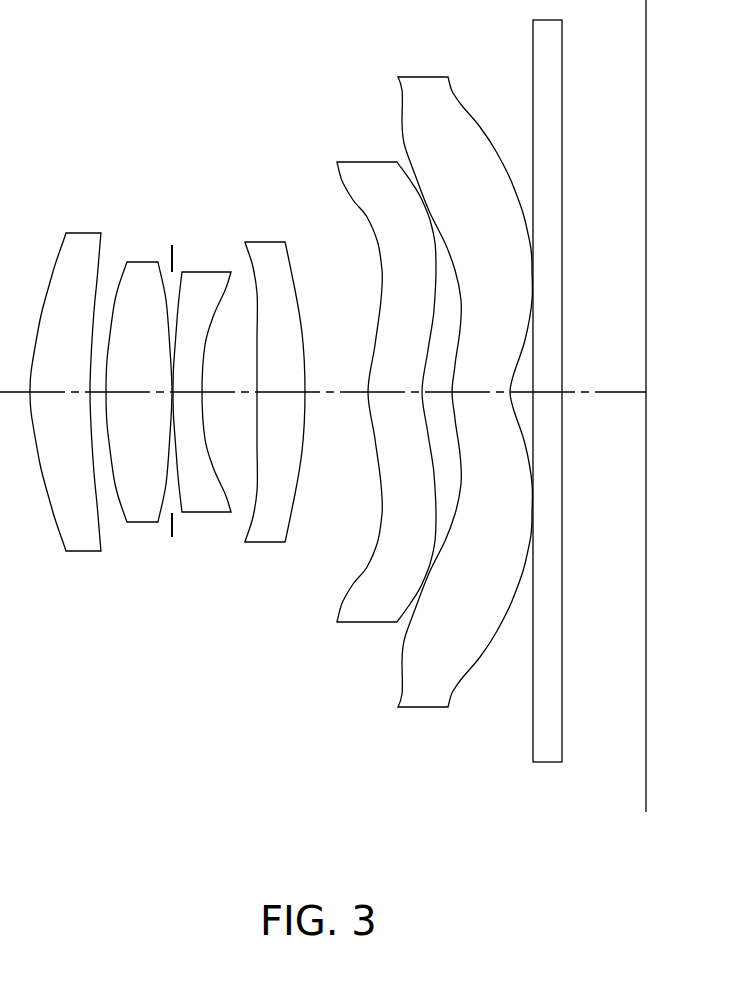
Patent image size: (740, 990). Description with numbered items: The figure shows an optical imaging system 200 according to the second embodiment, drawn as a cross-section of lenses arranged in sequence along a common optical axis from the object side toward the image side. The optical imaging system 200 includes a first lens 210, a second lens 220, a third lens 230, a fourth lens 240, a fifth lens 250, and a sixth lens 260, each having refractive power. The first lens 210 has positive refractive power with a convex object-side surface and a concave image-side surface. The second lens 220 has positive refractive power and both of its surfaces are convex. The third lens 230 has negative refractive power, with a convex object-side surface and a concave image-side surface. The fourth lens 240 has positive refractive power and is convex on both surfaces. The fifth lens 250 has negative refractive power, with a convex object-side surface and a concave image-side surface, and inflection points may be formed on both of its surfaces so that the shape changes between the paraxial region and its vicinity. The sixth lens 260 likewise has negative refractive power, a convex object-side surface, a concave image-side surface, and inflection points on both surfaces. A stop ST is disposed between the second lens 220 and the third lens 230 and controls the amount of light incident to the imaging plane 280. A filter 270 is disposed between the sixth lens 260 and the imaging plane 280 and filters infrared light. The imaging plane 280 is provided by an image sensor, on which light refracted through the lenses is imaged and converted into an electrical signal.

The optical imaging system 200 is at (263, 128).
The first lens 210 is at (82, 551).
The second lens 220 is at (141, 523).
The third lens 230 is at (204, 513).
The fourth lens 240 is at (263, 542).
The fifth lens 250 is at (366, 622).
The sixth lens 260 is at (421, 707).
The filter 270 is at (542, 762).
The imaging plane 280 is at (645, 797).
The stop ST is at (174, 250).